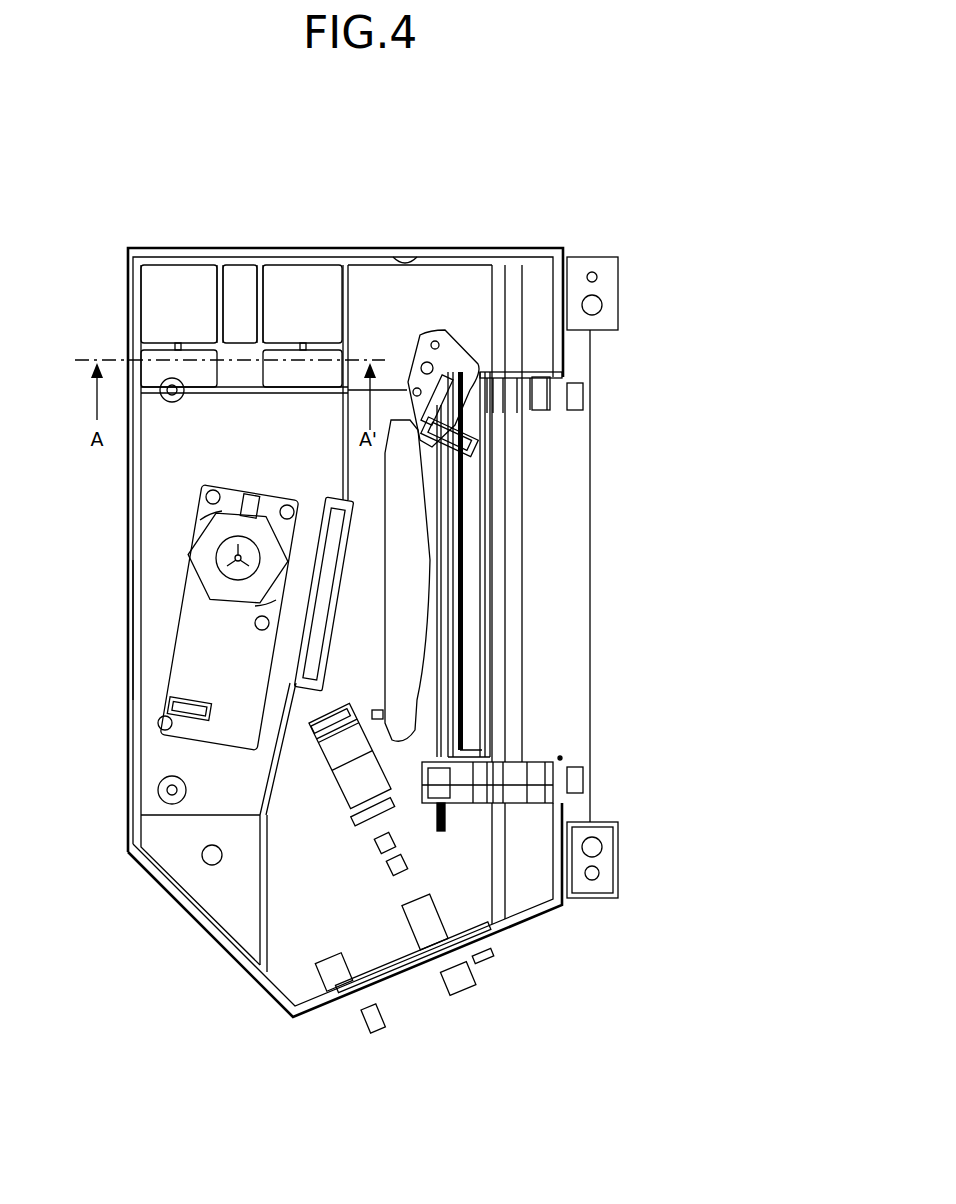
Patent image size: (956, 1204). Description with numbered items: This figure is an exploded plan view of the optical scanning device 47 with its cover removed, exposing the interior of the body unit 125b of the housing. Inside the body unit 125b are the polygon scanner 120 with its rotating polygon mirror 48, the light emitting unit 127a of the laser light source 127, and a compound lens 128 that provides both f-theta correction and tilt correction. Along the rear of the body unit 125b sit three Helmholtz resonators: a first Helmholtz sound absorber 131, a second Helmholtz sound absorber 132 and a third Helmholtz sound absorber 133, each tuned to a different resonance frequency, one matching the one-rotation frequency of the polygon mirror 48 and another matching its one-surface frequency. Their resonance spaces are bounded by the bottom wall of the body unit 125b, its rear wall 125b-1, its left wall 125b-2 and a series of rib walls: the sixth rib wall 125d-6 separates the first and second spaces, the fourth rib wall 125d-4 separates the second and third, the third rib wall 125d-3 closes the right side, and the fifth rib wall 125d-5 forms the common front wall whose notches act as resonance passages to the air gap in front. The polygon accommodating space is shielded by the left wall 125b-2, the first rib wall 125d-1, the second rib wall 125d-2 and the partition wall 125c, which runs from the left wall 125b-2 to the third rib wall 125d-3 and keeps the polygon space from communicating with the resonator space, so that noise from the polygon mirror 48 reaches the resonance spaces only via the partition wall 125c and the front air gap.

The optical scanning device 47 is at (597, 224).
The first Helmholtz sound absorber 131 is at (176, 280).
The second Helmholtz sound absorber 132 is at (241, 281).
The third Helmholtz sound absorber 133 is at (306, 281).
The body unit 125b is at (471, 247).
The rear wall 125b-1 is at (405, 262).
The left wall 125b-2 is at (150, 627).
The first rib wall 125d-1 is at (205, 812).
The second rib wall 125d-2 is at (278, 745).
The third rib wall 125d-3 is at (348, 300).
The fourth rib wall 125d-4 is at (263, 322).
The fifth rib wall 125d-5 is at (295, 352).
The sixth rib wall 125d-6 is at (217, 322).
The partition wall 125c is at (210, 393).
The polygon scanner 120 is at (228, 478).
The polygon mirror 48 is at (212, 535).
The compound lens 128 is at (420, 540).
The laser light source 127 is at (415, 990).
The light emitting unit 127a is at (425, 915).